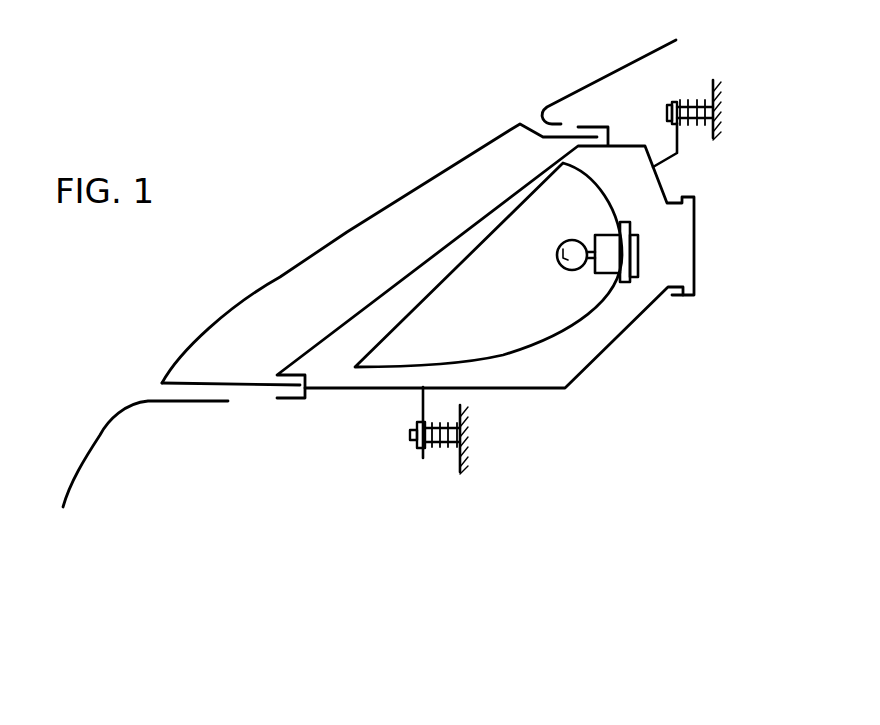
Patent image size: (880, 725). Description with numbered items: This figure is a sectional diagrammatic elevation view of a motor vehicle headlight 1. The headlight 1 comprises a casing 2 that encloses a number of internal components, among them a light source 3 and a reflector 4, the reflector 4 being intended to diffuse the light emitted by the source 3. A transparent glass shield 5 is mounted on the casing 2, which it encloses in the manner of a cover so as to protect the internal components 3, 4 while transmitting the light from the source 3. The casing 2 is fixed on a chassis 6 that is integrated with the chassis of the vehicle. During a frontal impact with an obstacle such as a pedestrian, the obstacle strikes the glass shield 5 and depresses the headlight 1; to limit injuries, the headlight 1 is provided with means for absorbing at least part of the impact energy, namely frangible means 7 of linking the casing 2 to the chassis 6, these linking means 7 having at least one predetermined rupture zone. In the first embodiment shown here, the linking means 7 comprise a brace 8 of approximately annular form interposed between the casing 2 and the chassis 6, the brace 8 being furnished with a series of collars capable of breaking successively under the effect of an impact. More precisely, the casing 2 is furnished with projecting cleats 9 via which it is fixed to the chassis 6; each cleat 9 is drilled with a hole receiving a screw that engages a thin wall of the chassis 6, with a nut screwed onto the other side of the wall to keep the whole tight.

The motor vehicle headlight 1 is at (276, 189).
The casing 2 is at (583, 370).
The light source 3 is at (557, 264).
The reflector 4 is at (503, 355).
The transparent glass shield 5 is at (235, 308).
The chassis 6 is at (713, 85).
The frangible linking means 7 is at (688, 84).
The brace 8 is at (556, 278).
The projecting cleat 9 is at (677, 153).